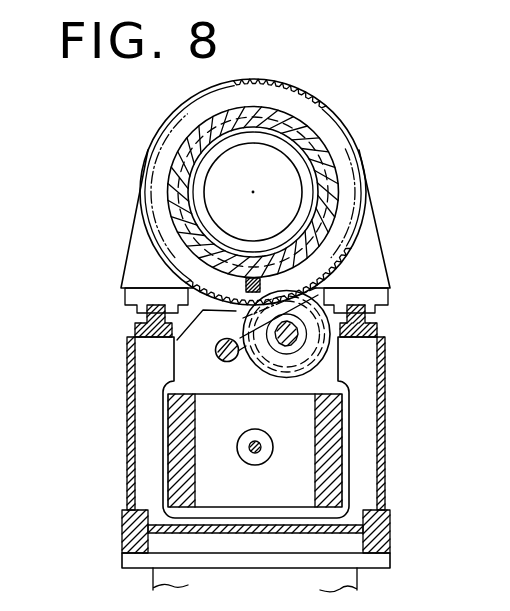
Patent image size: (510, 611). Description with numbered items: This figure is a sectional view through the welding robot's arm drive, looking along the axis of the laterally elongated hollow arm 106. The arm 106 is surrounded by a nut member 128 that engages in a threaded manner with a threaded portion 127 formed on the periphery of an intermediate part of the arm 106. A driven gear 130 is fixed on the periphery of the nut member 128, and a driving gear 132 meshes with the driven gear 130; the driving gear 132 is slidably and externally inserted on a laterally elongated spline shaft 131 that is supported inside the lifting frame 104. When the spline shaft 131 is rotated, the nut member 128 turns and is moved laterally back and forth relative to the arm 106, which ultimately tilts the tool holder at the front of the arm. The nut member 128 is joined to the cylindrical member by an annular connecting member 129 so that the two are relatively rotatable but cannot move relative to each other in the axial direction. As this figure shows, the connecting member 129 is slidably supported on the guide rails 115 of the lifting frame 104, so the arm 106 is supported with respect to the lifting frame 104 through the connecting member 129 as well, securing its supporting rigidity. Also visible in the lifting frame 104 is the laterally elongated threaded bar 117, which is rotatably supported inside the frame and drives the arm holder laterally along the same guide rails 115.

The lifting frame 104 is at (385, 433).
The arm 106 is at (310, 192).
The guide rails 115 is at (137, 312).
The threaded bar 117 is at (216, 355).
The threaded portion 127 is at (315, 164).
The nut member 128 is at (314, 137).
The connecting member 129 is at (368, 252).
The driven gear 130 is at (312, 96).
The spline shaft 131 is at (302, 342).
The driving gear 132 is at (243, 319).